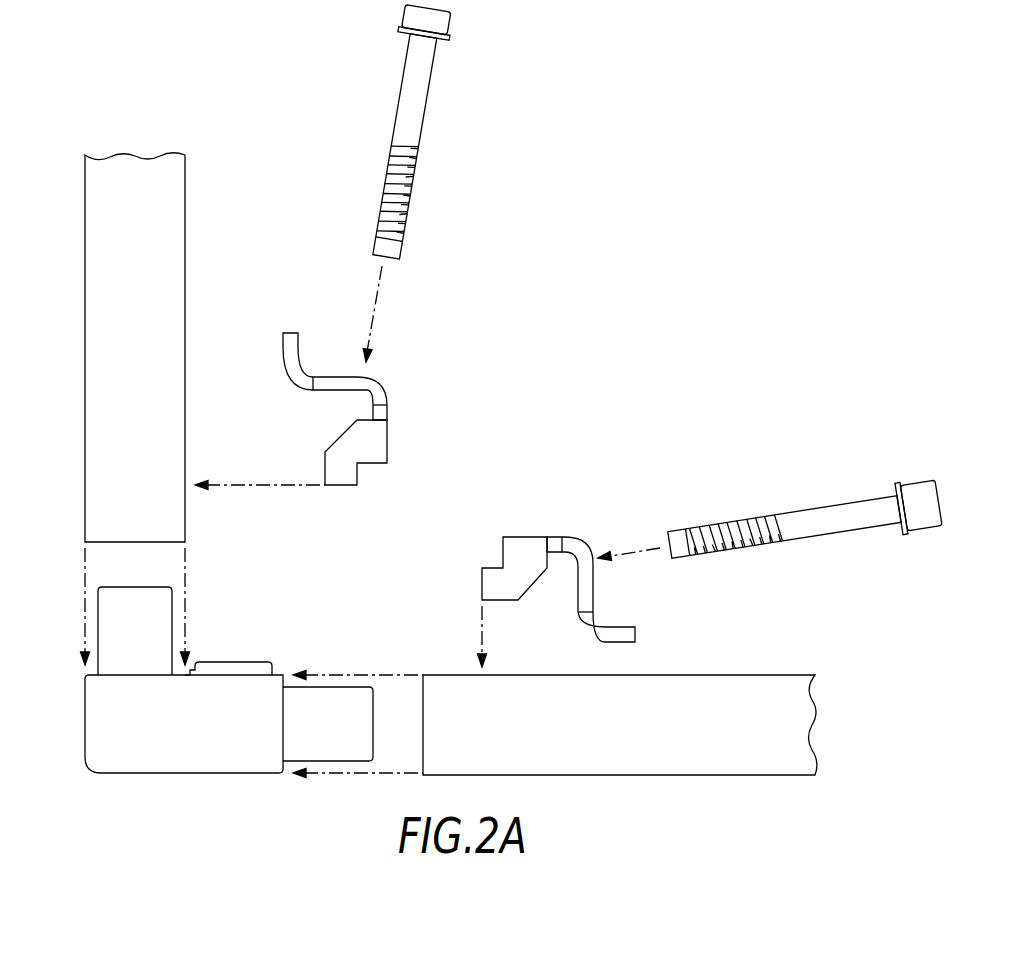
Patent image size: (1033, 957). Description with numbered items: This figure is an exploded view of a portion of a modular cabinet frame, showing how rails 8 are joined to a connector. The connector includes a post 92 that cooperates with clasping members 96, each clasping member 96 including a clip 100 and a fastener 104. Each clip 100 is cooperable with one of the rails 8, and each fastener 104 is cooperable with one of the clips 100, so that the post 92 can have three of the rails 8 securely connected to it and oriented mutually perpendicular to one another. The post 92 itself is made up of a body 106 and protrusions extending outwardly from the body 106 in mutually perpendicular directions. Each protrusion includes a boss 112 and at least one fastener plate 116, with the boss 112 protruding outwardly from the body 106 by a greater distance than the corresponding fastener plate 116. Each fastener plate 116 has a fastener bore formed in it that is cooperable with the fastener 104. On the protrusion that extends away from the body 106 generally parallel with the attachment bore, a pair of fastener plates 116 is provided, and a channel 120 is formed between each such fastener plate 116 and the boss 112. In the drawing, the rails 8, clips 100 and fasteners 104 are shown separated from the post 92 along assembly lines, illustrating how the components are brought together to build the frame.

The rail 8 is at (200, 224).
The post 92 is at (220, 722).
The clasping member 96 is at (389, 360).
The clip 100 is at (402, 439).
The fastener 104 is at (427, 120).
The body 106 is at (85, 745).
The boss 112 is at (98, 607).
The fastener plate 116 is at (258, 662).
The channel 120 is at (190, 673).